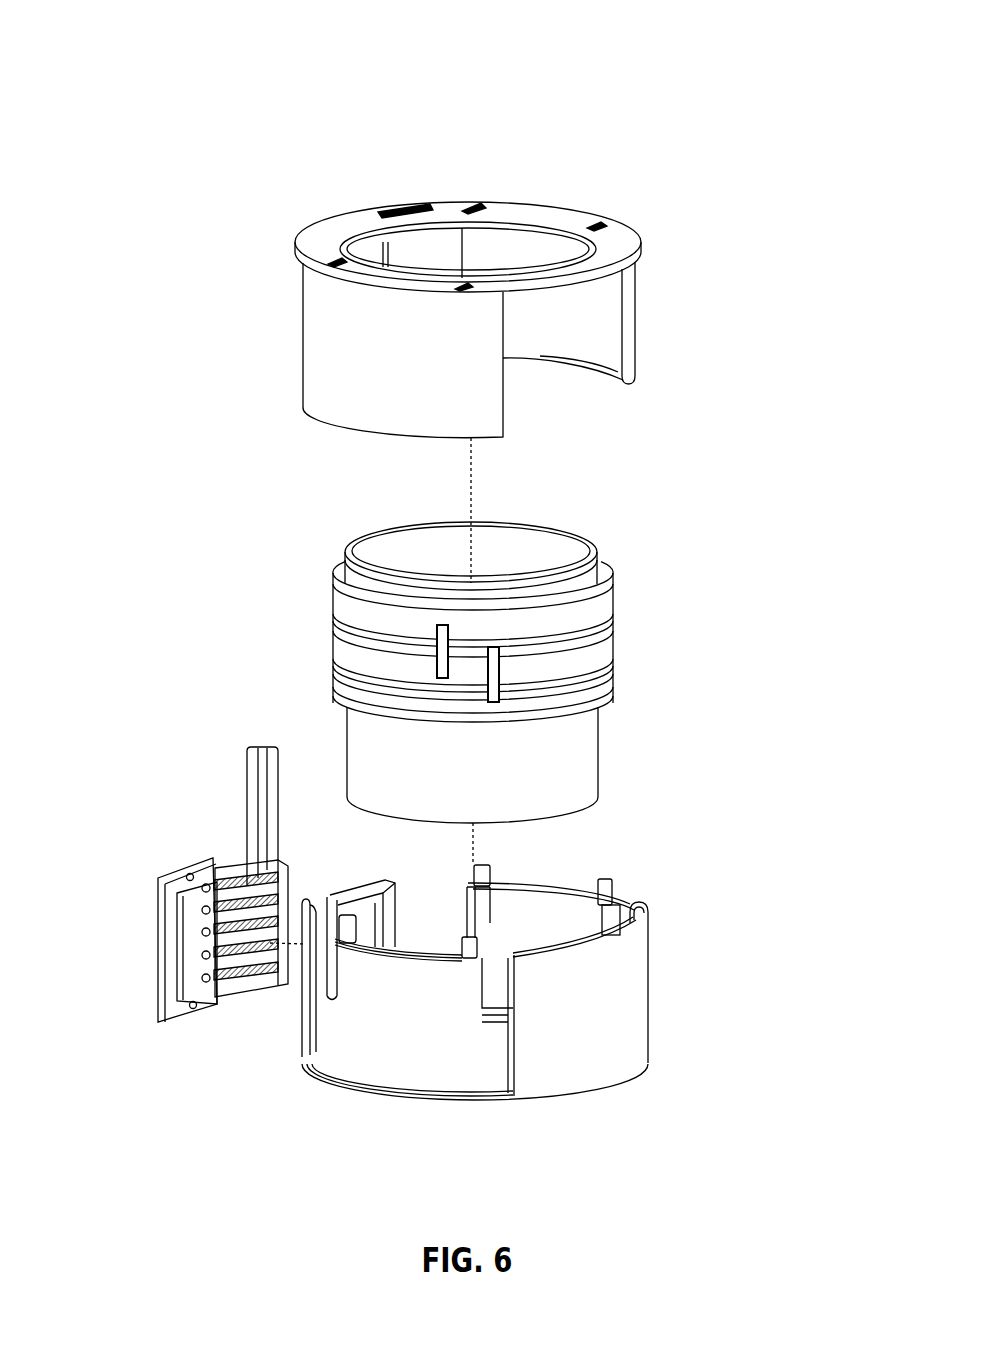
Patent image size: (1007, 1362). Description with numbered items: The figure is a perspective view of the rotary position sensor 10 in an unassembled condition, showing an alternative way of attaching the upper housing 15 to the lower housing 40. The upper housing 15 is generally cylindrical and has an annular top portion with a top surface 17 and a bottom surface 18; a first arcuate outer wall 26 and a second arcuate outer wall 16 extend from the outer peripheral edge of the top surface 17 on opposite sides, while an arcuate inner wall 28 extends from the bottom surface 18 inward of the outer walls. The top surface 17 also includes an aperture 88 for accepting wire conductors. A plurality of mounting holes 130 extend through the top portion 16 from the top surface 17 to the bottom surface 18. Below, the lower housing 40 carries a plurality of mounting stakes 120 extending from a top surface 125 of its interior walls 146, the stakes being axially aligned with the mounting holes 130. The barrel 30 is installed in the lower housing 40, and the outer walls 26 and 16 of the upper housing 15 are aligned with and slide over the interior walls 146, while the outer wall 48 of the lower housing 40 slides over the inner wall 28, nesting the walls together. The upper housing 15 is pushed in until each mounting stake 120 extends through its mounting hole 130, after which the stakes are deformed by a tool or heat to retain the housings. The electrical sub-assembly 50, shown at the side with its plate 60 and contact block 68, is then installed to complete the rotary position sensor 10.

The rotary position sensor 10 is at (372, 105).
The upper housing 15 is at (692, 205).
The second arcuate outer wall 16 is at (352, 212).
The top surface 17 is at (322, 232).
The bottom surface 18 is at (595, 280).
The first arcuate outer wall 26 is at (340, 355).
The arcuate inner wall 28 is at (567, 327).
The mounting holes 130 is at (470, 205).
The barrel 30 is at (652, 538).
The lower housing 40 is at (703, 814).
The outer wall 48 is at (627, 1023).
The aperture 88 is at (420, 935).
The mounting stakes 120 is at (485, 862).
The top surface 125 is at (518, 882).
The interior walls 146 is at (512, 918).
The electrical sub-assembly 50 is at (131, 788).
The mounting plate 60 is at (165, 997).
The contact block 68 is at (262, 988).